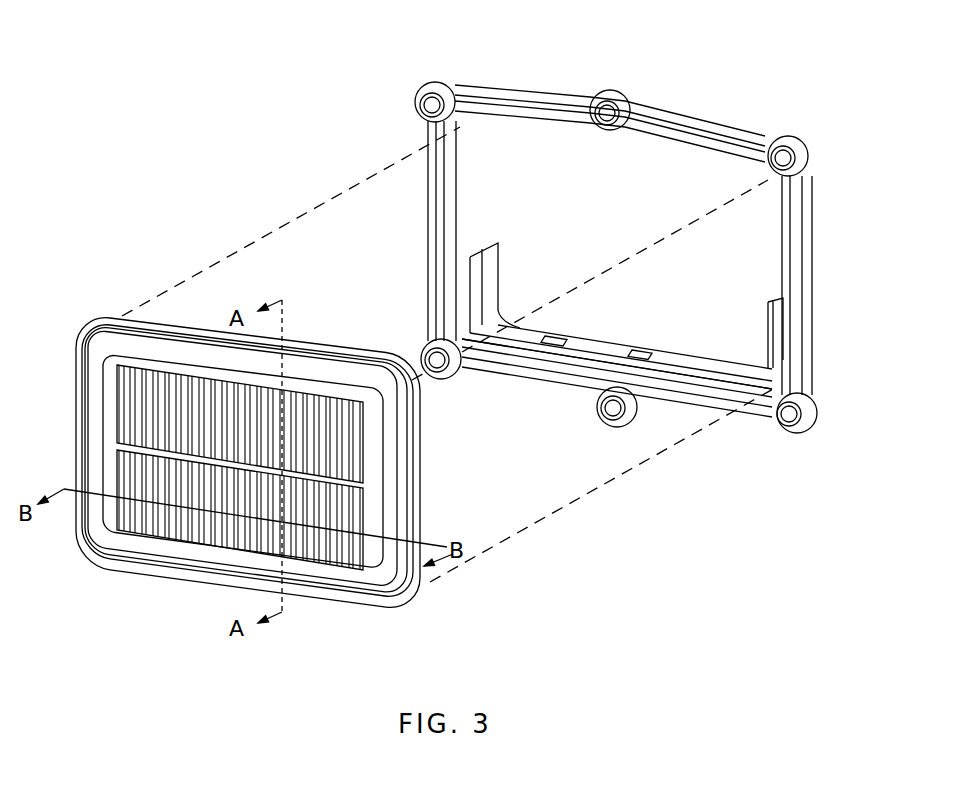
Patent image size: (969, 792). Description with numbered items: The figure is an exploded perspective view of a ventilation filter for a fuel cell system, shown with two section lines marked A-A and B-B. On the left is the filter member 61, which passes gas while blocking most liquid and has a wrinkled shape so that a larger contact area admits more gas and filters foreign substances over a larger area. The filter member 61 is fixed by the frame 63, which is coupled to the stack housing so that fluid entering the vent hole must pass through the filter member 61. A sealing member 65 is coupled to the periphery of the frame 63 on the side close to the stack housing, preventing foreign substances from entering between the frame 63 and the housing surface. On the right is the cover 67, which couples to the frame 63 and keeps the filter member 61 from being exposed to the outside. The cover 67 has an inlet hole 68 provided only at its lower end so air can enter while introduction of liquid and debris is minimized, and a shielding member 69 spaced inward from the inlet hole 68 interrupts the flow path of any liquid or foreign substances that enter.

The filter member 61 is at (132, 426).
The frame 63 is at (422, 580).
The sealing member 65 is at (102, 555).
The cover 67 is at (447, 85).
The inlet hole 68 is at (748, 388).
The shielding member 69 is at (777, 327).